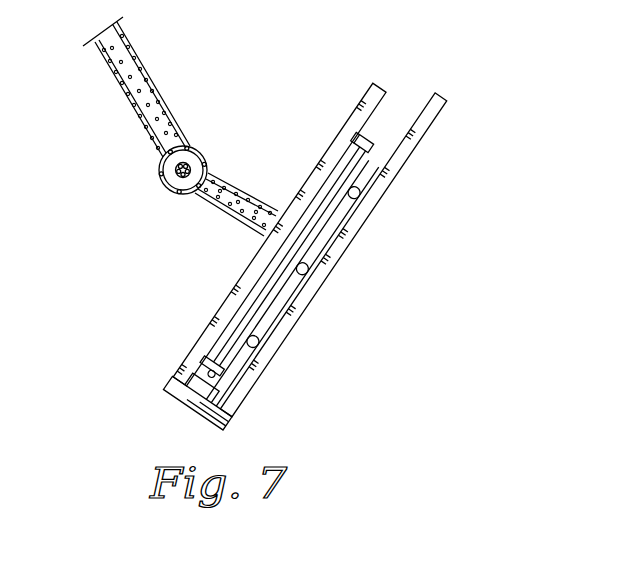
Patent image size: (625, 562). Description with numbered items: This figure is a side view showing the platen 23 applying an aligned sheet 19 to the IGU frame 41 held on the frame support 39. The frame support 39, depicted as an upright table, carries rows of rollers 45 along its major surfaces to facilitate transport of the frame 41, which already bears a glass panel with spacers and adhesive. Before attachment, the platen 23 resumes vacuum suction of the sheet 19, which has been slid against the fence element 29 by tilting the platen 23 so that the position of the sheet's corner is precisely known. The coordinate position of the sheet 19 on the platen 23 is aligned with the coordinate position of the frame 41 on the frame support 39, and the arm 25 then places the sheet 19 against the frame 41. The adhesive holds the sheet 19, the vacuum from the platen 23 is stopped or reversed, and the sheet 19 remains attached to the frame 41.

The sheet 19 is at (360, 141).
The platen 23 is at (376, 84).
The arm 25 is at (133, 107).
The fence element 29 is at (203, 366).
The frame support 39 is at (441, 94).
The IGU frame 41 is at (362, 150).
The rollers 45 is at (258, 343).